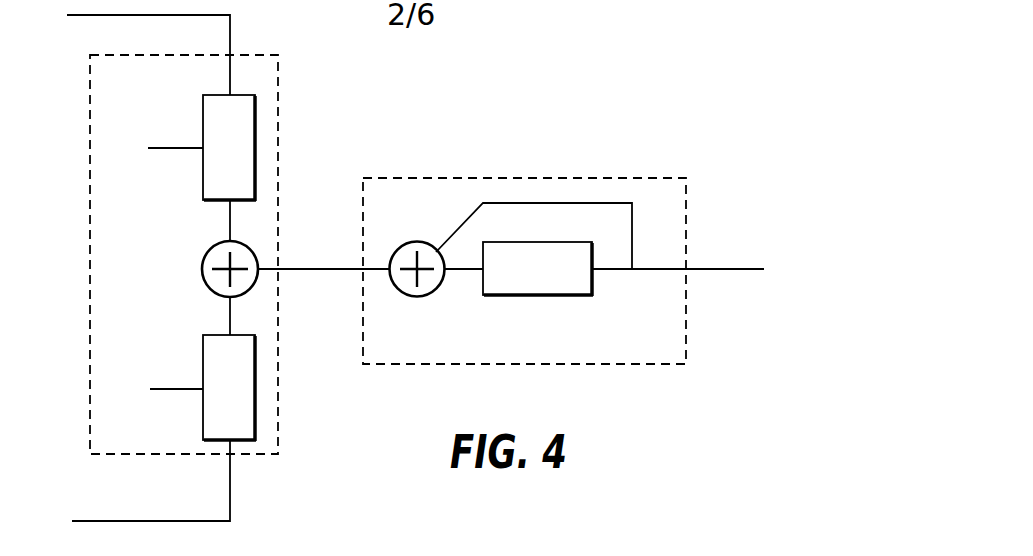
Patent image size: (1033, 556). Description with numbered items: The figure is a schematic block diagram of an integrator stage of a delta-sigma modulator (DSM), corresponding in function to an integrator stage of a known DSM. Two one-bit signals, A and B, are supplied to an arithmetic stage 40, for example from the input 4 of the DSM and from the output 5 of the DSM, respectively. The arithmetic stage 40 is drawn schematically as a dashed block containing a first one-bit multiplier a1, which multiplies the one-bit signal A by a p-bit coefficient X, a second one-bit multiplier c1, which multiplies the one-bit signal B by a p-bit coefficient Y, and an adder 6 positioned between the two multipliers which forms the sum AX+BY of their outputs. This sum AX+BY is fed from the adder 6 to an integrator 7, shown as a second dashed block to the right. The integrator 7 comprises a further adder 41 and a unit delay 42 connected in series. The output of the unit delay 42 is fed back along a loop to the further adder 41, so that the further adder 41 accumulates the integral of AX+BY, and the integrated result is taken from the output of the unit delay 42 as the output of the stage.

The input 4 is at (230, 38).
The output 5 is at (230, 482).
The adder 6 is at (205, 266).
The integrator 7 is at (460, 178).
The arithmetic stage 40 is at (278, 127).
The further adder 41 is at (408, 292).
The unit delay 42 is at (546, 293).
The first 1-bit multiplier a1 is at (217, 173).
The second 1-bit multiplier c1 is at (219, 402).